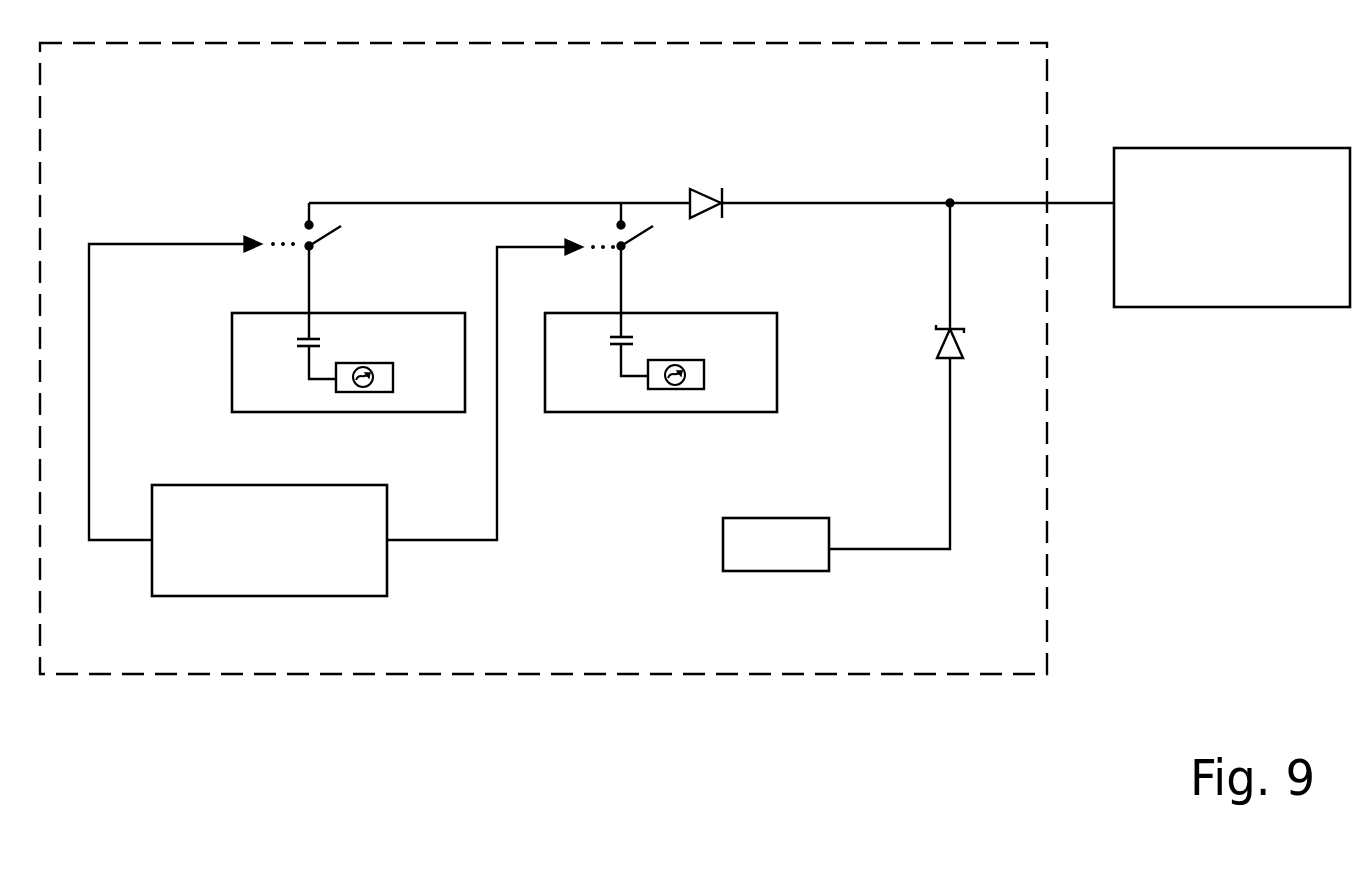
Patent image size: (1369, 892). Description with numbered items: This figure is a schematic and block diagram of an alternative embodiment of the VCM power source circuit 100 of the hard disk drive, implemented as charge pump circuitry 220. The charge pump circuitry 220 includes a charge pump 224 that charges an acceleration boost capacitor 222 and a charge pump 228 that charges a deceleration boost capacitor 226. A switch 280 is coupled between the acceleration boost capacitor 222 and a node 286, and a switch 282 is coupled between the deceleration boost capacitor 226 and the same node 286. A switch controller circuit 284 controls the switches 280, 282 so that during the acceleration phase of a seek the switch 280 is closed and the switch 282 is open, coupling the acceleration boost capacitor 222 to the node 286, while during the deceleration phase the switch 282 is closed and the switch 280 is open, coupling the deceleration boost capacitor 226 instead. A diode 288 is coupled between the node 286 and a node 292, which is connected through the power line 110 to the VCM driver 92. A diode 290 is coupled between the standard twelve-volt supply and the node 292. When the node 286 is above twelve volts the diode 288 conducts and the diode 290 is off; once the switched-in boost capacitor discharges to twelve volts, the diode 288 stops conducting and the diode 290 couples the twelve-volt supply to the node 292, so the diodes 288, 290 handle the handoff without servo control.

The VCM power source circuit 100 is at (232, 43).
The charge pump circuitry 220 is at (600, 102).
The node 286 is at (480, 203).
The diode 288 is at (700, 198).
The node 292 is at (850, 185).
The power line 110 is at (1073, 203).
The VCM driver 92 is at (1182, 148).
The switch 280 is at (326, 248).
The switch 282 is at (639, 249).
The acceleration boost capacitor 222 is at (313, 349).
The deceleration boost capacitor 226 is at (625, 348).
The charge pump 224 is at (282, 412).
The charge pump 228 is at (697, 412).
The diode 290 is at (937, 352).
The switch controller circuit 284 is at (275, 596).